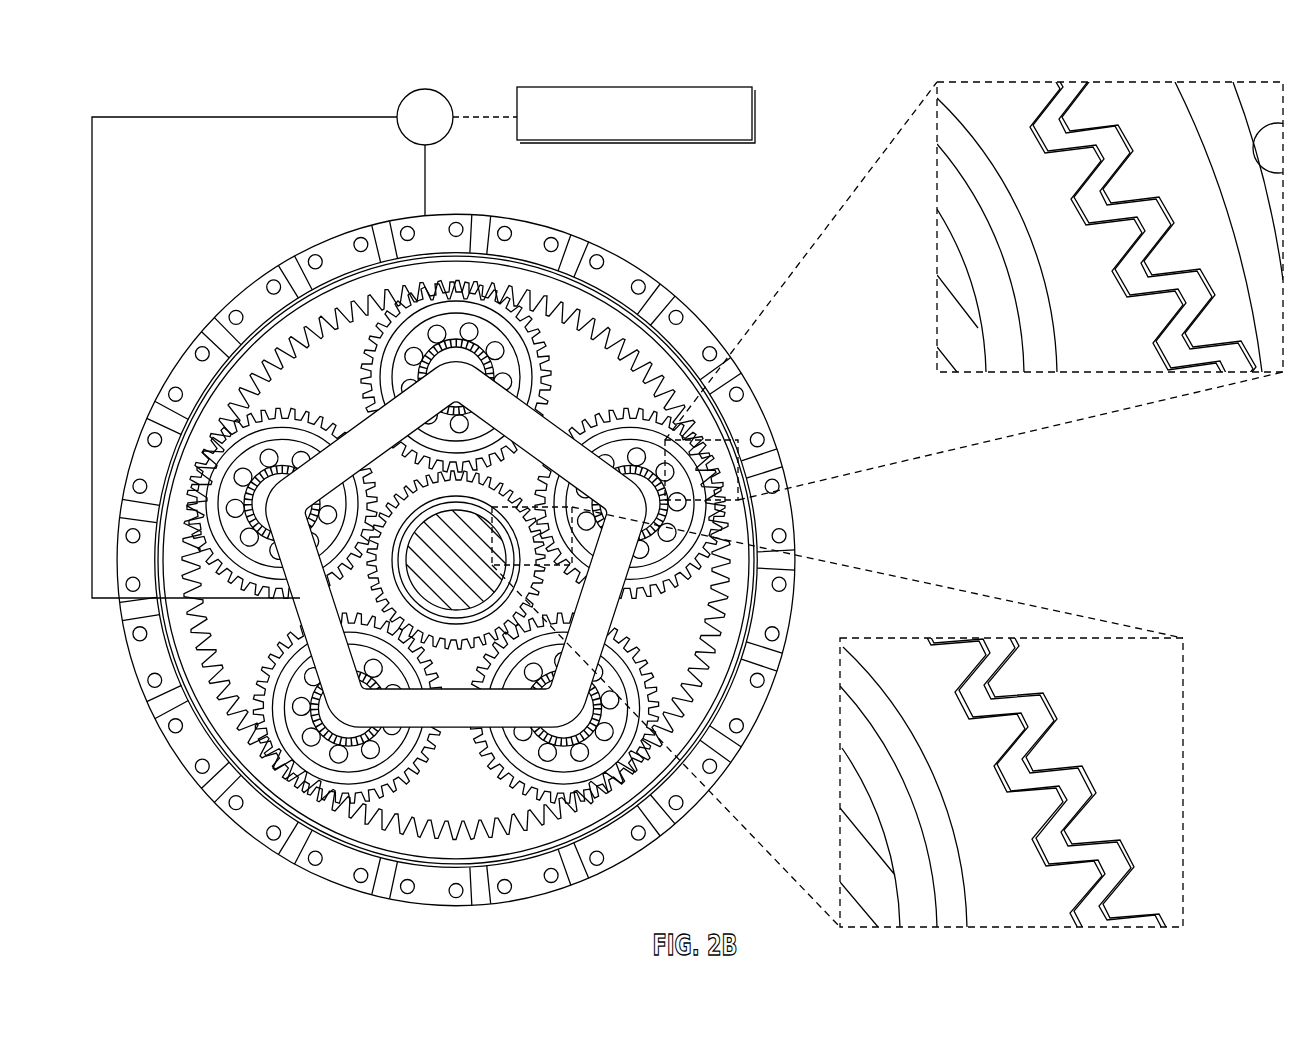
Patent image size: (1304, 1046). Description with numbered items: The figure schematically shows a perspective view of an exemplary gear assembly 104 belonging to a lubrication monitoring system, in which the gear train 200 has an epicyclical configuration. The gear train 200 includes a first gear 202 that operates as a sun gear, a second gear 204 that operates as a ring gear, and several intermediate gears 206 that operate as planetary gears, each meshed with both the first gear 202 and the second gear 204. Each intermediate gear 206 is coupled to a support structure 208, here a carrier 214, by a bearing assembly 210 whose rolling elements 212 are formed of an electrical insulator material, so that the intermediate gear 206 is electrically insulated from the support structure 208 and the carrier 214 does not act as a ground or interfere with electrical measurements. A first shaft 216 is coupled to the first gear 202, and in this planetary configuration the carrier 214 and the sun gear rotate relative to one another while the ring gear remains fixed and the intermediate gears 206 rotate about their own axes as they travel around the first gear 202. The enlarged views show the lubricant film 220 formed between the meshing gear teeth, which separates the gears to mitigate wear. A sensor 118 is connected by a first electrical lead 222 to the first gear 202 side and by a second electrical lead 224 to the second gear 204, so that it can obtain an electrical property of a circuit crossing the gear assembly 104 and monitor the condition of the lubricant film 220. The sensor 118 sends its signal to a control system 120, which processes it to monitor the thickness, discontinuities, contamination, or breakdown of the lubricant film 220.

The gear assembly 104 is at (806, 136).
The sensor 118 is at (409, 130).
The control system 120 is at (703, 87).
The gear train 200 is at (742, 207).
The first gear 202 is at (411, 501).
The second gear 204 is at (619, 277).
The intermediate gear 206 is at (472, 300).
The support structure 208 is at (440, 360).
The bearing assembly 210 is at (505, 374).
The rolling elements 212 is at (507, 351).
The carrier 214 is at (456, 716).
The first shaft 216 is at (439, 573).
The lubricant film 220 is at (1072, 132).
The first electrical lead 222 is at (270, 117).
The second electrical lead 224 is at (427, 193).